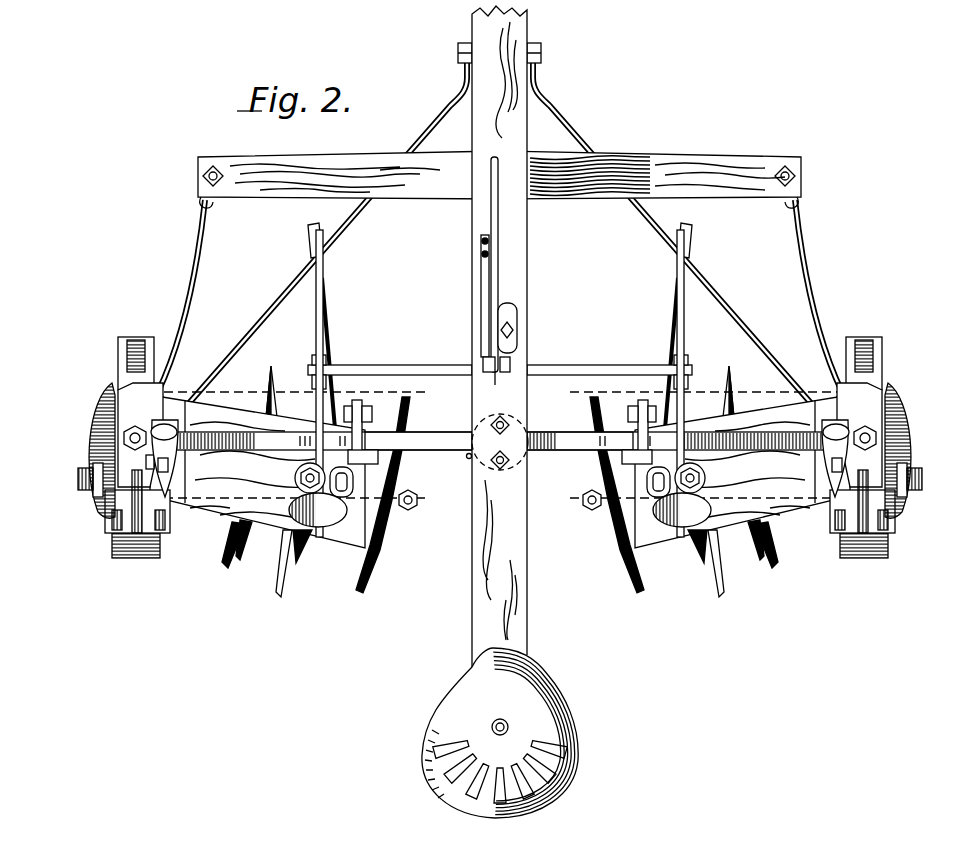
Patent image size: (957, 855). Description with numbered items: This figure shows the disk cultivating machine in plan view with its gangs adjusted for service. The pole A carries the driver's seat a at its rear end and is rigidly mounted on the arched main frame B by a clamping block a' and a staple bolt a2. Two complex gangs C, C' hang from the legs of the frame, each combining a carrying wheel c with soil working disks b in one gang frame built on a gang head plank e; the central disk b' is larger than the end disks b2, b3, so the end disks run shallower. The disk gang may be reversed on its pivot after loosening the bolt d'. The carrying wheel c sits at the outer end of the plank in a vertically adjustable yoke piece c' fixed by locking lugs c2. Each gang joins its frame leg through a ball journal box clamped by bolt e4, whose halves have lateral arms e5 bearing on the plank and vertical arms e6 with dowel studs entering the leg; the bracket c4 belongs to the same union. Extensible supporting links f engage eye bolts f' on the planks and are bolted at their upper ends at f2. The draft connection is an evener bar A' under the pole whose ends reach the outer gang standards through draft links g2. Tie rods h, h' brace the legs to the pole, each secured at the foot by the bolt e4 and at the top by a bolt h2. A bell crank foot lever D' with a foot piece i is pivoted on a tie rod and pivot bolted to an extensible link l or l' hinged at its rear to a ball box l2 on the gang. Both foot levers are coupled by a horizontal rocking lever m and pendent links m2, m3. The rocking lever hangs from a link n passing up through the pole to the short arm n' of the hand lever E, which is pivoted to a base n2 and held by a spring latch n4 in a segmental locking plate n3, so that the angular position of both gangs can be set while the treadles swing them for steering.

The pole A is at (499, 336).
The evener bar A' is at (499, 179).
The driver's seat a is at (500, 733).
The clamping block a' is at (460, 472).
The staple bolt a2 is at (500, 442).
The main frame B is at (500, 430).
The soil working disk b is at (500, 556).
The central disk b' is at (505, 563).
The end disk b2 is at (501, 467).
The end disk b3 is at (500, 495).
The complex gang C is at (257, 502).
The complex gang C' is at (742, 508).
The carrying wheel c is at (500, 458).
The yoke piece c' is at (501, 450).
The locking lugs c2 is at (123, 535).
The bracket c4 is at (146, 462).
The foot lever D' is at (504, 380).
The bolt d' is at (504, 476).
The hand lever E is at (505, 264).
The gang head plank e is at (500, 456).
The clamping bolt e4 is at (832, 465).
The lateral arm e5 is at (172, 490).
The vertical arm e6 is at (500, 432).
The supporting link f is at (503, 418).
The eye bolt f' is at (499, 457).
The bolt f2 is at (372, 410).
The draft link g2 is at (500, 303).
The tie rod h is at (311, 254).
The tie rod h' is at (688, 254).
The bolt h2 is at (542, 56).
The foot piece i is at (500, 510).
The link l is at (335, 405).
The link l' is at (664, 405).
The ball box l2 is at (355, 484).
The rocking lever m is at (500, 360).
The link m2 is at (313, 364).
The link m3 is at (688, 364).
The link n is at (516, 374).
The short arm n' is at (483, 377).
The base n2 is at (516, 318).
The segmental locking plate n3 is at (481, 332).
The spring latch n4 is at (483, 300).